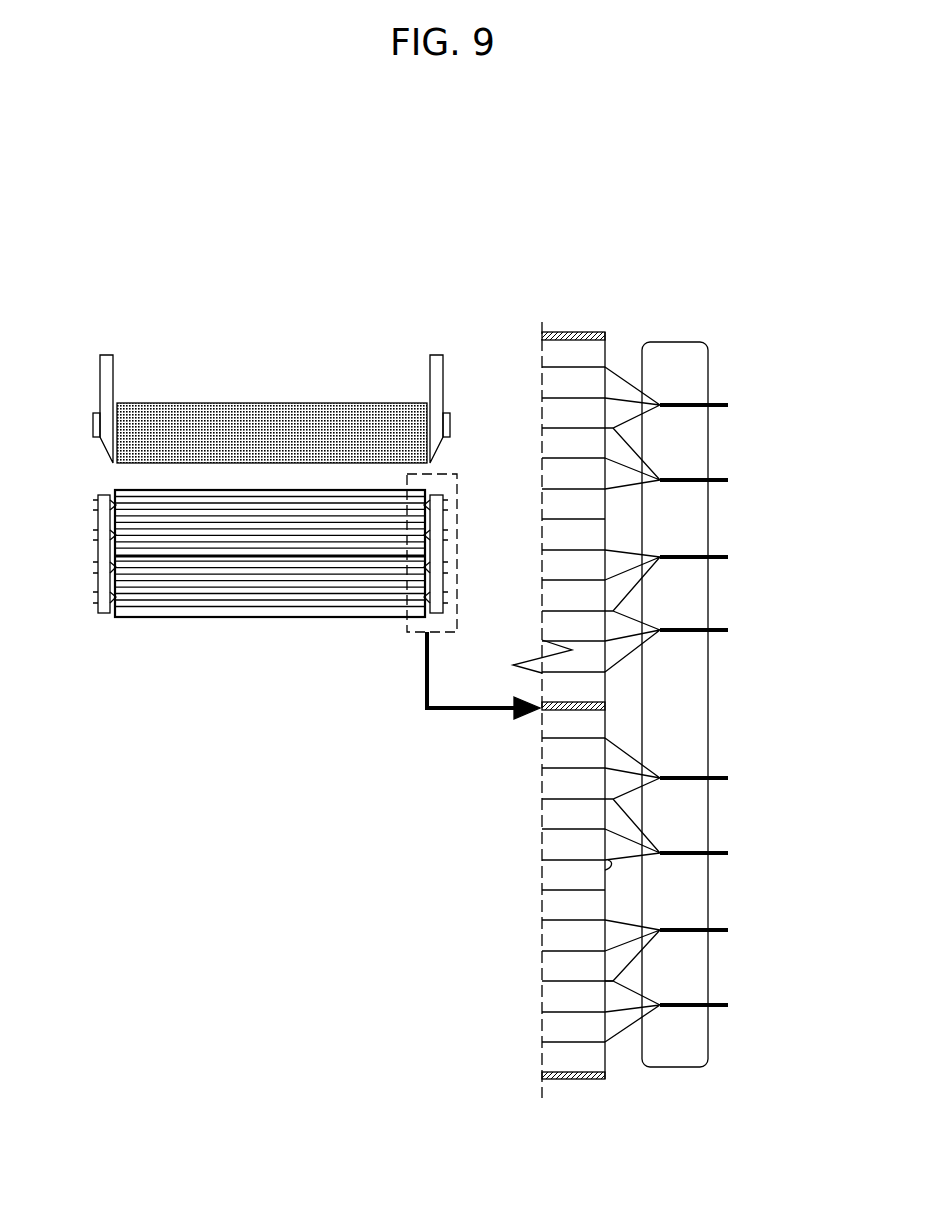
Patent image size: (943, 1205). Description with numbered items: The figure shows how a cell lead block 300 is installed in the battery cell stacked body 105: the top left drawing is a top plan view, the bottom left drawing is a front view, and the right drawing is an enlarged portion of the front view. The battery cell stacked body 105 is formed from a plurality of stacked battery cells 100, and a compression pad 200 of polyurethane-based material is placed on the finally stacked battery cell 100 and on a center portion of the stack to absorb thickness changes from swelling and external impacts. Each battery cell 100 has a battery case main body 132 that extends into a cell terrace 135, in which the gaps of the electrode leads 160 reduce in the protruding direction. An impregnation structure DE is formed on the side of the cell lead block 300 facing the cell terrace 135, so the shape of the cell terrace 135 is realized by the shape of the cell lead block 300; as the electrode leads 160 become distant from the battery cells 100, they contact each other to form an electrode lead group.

The battery cell 100 is at (560, 786).
The battery cell stacked body 105 is at (256, 562).
The battery case main body 132 is at (575, 982).
The cell terrace 135 is at (626, 1004).
The electrode lead 160 is at (605, 872).
The compression pad 200 is at (272, 430).
The cell lead block 300 is at (103, 355).
The impregnation structure DE is at (665, 562).